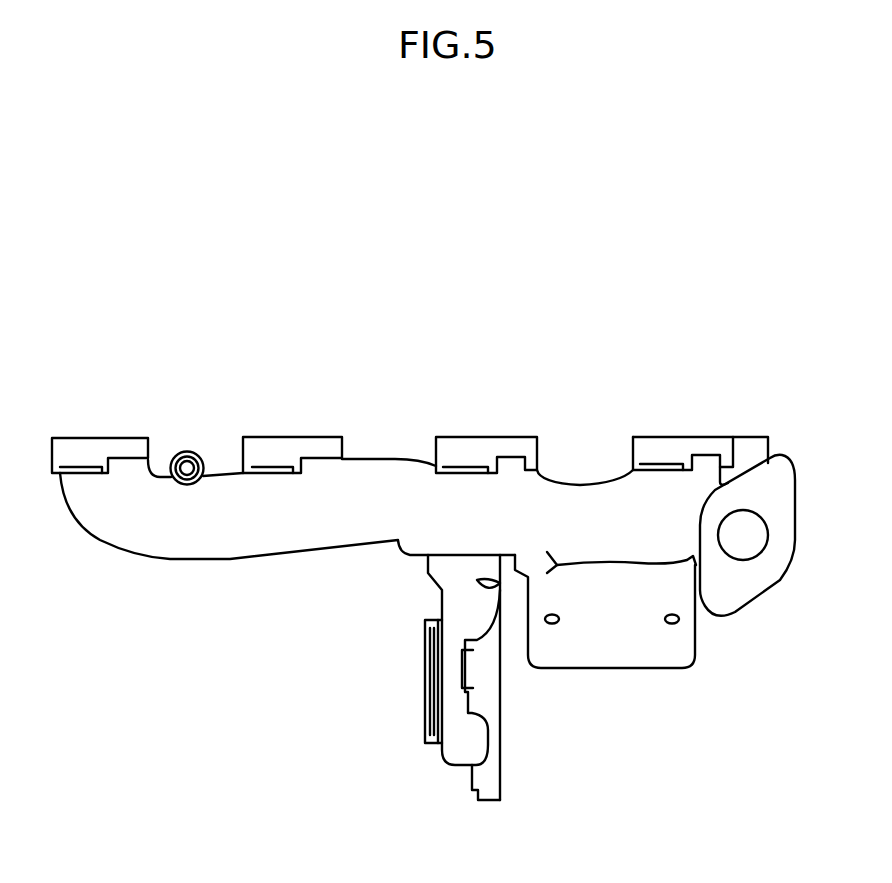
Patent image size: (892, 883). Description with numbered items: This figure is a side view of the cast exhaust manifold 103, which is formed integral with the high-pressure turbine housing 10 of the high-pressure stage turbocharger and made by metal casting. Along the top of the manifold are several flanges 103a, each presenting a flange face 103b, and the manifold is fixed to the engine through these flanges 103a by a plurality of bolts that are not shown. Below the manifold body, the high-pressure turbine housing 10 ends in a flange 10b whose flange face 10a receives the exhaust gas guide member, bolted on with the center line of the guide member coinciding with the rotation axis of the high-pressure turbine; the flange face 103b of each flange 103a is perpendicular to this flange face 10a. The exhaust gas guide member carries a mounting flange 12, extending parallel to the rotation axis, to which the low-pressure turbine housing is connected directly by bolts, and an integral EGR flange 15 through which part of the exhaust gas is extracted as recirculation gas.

The high-pressure turbine housing 10 is at (465, 747).
The flange face 10a is at (500, 730).
The flange 10b is at (492, 795).
The mounting flange 12 is at (645, 647).
The EGR flange 15 is at (743, 573).
The exhaust manifold 103 is at (267, 540).
The flange of the exhaust manifold 103a is at (117, 452).
The flange face 103b is at (63, 437).